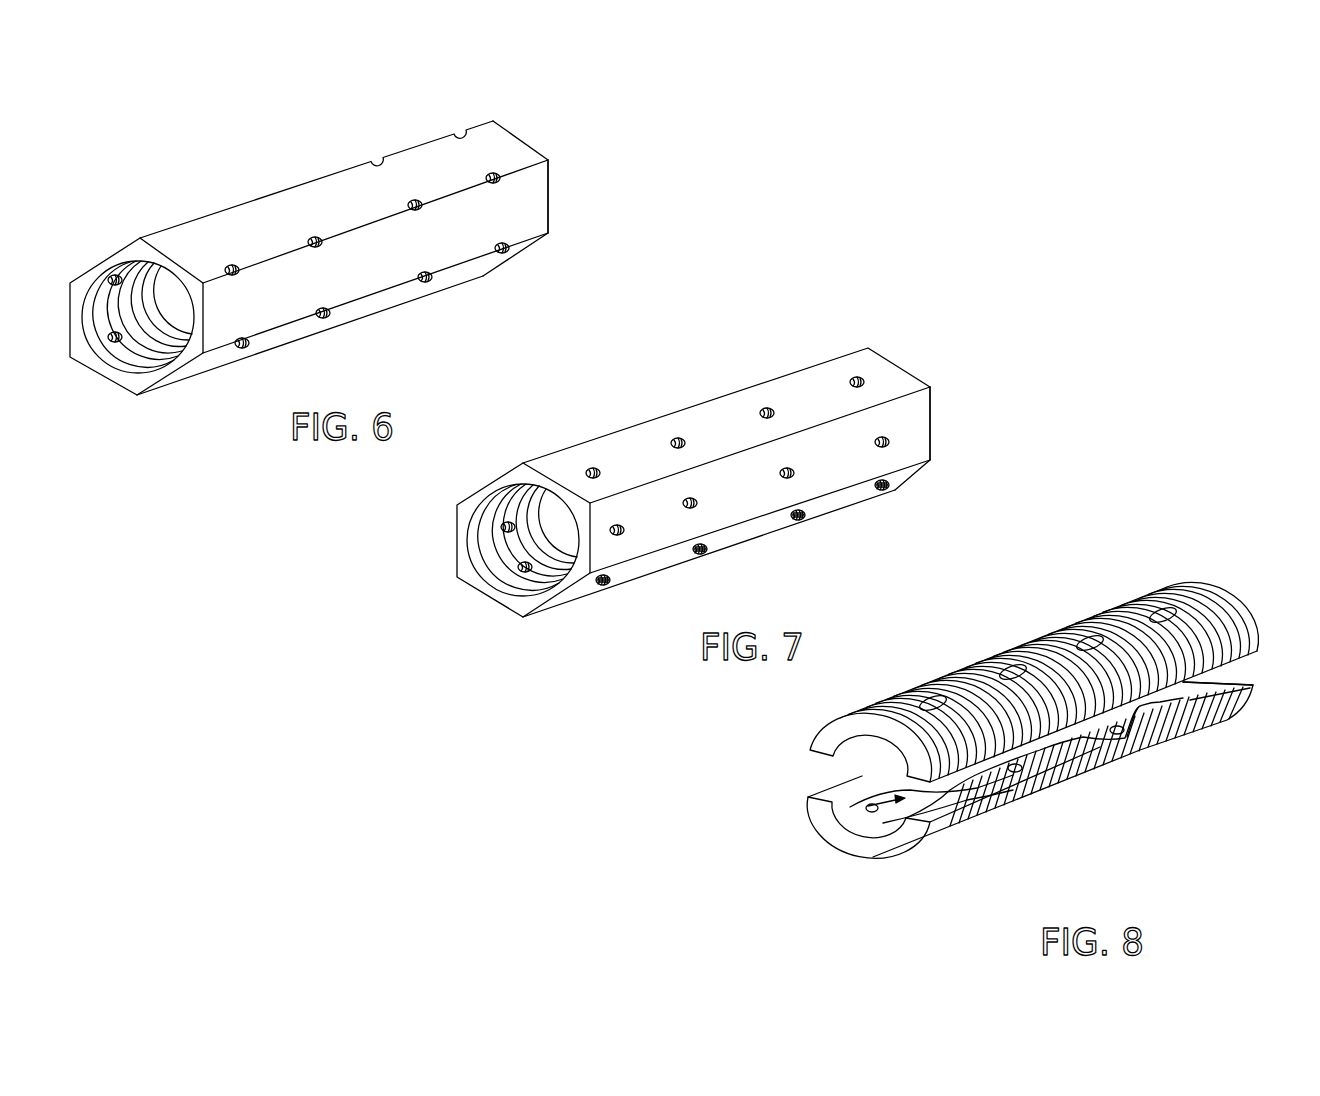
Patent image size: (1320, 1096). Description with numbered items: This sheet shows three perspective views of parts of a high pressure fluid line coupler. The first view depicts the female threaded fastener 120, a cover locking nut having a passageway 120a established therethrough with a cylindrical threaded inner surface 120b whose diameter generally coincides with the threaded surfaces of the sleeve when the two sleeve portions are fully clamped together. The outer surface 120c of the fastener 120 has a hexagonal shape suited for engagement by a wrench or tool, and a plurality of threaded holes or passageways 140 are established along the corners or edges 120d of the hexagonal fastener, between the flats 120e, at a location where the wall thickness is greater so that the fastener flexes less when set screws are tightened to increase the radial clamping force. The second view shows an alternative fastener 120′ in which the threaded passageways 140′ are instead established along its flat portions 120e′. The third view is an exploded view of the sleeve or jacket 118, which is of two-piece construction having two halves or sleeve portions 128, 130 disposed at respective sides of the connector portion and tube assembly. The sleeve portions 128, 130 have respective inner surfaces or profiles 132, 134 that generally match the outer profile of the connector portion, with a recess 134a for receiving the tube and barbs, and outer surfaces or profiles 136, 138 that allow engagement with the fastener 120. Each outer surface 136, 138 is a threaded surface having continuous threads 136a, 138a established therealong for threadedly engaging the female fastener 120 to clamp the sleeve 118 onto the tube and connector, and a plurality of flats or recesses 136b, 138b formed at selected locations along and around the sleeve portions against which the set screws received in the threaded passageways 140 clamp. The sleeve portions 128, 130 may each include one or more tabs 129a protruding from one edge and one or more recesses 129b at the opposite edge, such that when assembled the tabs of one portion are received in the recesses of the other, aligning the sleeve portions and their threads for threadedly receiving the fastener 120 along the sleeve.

In FIG. 6, the female threaded fastener 120 is at (344, 266).
In FIG. 6, the passageway 120a is at (130, 355).
In FIG. 6, the cylindrical threaded inner surface 120b is at (170, 350).
In FIG. 6, the outer surface 120c is at (397, 303).
In FIG. 6, the corners or edges 120d is at (550, 165).
In FIG. 6, the flats 120e is at (530, 202).
In FIG. 6, the threaded holes or passageways 140 is at (383, 157).
In FIG. 7, the fastener 120′ is at (693, 481).
In FIG. 7, the flat portions 120e′ is at (893, 378).
In FIG. 7, the threaded passageways 140′ is at (680, 438).
In FIG. 8, the sleeve or jacket 118 is at (1008, 724).
In FIG. 8, the sleeve portion 128 is at (1042, 651).
In FIG. 8, the sleeve portion 130 is at (1009, 793).
In FIG. 8, the inner surface or profile 132 is at (877, 773).
In FIG. 8, the inner surface or profile 134 is at (840, 805).
In FIG. 8, the recess 134a is at (1063, 742).
In FIG. 8, the outer surface or profile 136 is at (1123, 591).
In FIG. 8, the threads 136a is at (1060, 630).
In FIG. 8, the flats or recesses 136b is at (1007, 650).
In FIG. 8, the outer surface or profile 138 is at (1219, 733).
In FIG. 8, the threads 138a is at (1013, 810).
In FIG. 8, the flats or recesses 138b is at (875, 813).
In FIG. 8, the tab 129a is at (1142, 758).
In FIG. 8, the recess 129b is at (1124, 740).